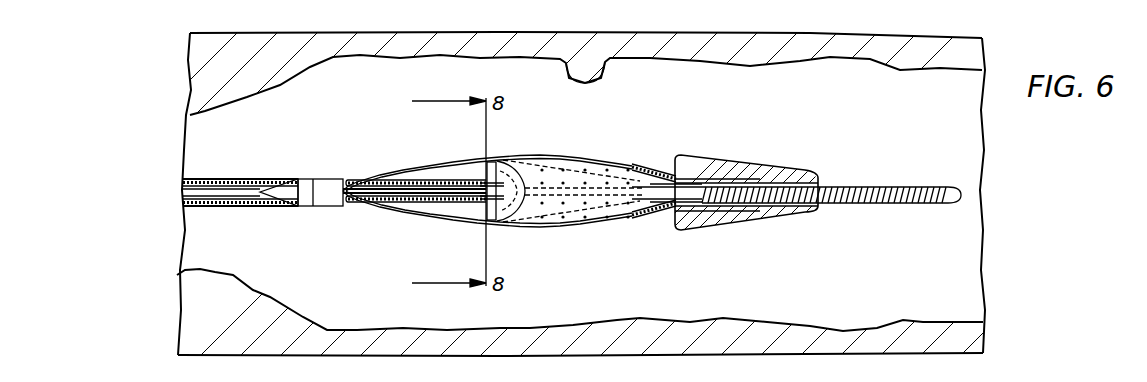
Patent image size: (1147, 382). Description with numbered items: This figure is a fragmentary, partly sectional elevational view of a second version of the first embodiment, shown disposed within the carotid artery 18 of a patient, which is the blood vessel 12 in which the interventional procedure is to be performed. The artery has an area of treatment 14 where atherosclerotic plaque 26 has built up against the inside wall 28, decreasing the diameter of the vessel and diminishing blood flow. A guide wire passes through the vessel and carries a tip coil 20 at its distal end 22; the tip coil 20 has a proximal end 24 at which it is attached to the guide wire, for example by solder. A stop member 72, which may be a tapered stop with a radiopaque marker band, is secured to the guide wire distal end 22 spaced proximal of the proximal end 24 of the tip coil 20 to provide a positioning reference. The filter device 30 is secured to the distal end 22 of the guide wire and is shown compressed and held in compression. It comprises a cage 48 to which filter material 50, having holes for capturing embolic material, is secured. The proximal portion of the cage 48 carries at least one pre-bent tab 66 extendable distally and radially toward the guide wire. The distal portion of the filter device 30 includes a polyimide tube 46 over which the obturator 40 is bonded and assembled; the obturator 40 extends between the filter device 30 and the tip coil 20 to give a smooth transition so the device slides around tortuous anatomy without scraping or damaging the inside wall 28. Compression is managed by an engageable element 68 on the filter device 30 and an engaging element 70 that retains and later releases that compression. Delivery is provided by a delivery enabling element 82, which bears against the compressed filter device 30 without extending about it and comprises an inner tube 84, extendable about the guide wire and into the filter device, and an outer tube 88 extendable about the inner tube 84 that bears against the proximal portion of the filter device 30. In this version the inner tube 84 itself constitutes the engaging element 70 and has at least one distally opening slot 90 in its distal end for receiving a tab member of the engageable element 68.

The blood vessel 12 is at (482, 38).
The area of treatment 14 is at (302, 55).
The carotid artery 18 is at (760, 50).
The tip coil 20 is at (856, 204).
The distal end 22 is at (940, 187).
The proximal end 24 is at (733, 183).
The atherosclerotic plaque 26 is at (262, 56).
The inside wall 28 is at (606, 60).
The filter device 30 is at (453, 222).
The obturator 40 is at (723, 226).
The tube 46 is at (658, 198).
The cage 48 is at (413, 167).
The filter material 50 is at (589, 161).
The tab 66 is at (378, 205).
The engageable element 68 is at (505, 217).
The engaging element 70 is at (449, 183).
The stop member 72 is at (570, 200).
The delivery enabling element 82 is at (232, 205).
The inner tube 84 is at (412, 204).
The outer tube 88 is at (228, 181).
The slot 90 is at (510, 178).